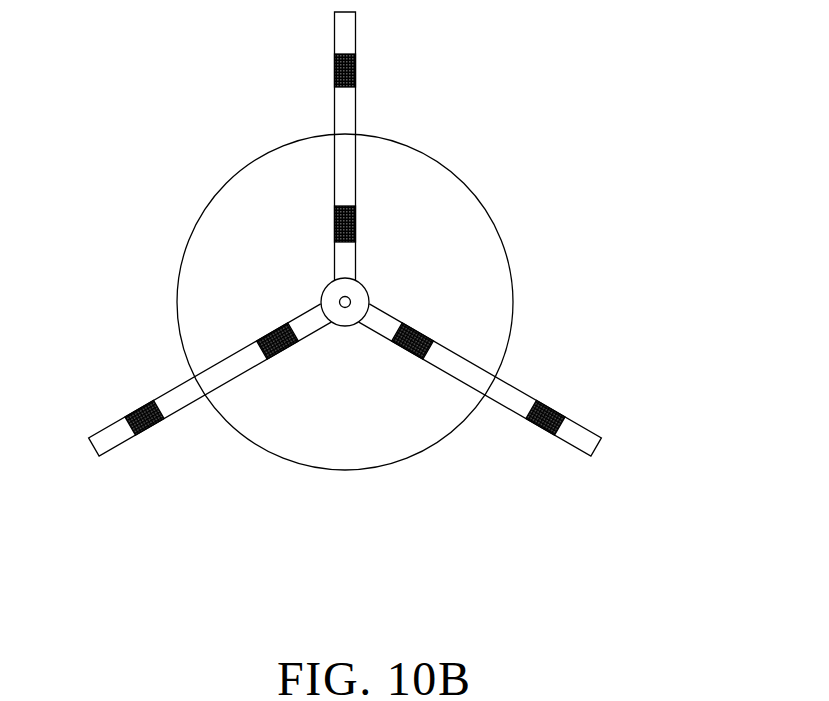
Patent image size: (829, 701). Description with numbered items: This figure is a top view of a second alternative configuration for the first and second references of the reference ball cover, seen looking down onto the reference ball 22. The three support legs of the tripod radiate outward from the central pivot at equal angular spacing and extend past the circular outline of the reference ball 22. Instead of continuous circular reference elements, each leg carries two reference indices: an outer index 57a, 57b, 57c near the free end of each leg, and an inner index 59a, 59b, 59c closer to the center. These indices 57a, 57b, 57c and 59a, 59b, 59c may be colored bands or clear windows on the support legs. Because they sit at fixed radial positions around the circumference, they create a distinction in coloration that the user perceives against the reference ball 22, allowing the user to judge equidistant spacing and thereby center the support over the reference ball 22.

The reference ball 22 is at (250, 230).
The reference index 57a is at (152, 430).
The reference index 57b is at (538, 425).
The reference index 57c is at (353, 62).
The reference index 59a is at (280, 357).
The reference index 59b is at (423, 327).
The reference index 59c is at (355, 213).